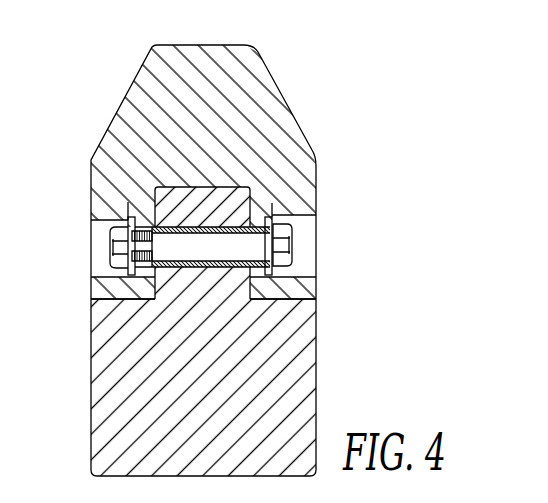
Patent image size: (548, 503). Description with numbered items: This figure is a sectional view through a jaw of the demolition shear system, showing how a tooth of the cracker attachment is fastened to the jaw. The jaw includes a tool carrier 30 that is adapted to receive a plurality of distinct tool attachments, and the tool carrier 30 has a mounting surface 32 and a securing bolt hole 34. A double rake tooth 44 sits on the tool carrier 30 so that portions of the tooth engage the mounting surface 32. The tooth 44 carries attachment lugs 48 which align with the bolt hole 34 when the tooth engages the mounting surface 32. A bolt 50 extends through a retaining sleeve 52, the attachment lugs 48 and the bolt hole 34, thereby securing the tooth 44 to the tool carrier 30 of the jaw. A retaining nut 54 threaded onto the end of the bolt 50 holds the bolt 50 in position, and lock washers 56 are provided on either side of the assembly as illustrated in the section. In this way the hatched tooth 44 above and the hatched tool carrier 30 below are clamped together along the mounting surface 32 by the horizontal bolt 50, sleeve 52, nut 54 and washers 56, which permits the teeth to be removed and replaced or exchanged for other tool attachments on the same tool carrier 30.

The tool carrier 30 is at (316, 363).
The mounting surface 32 is at (297, 304).
The securing bolt hole 34 is at (212, 268).
The double rake tooth 44 is at (268, 92).
The attachment lug 48 is at (92, 289).
The bolt 50 is at (295, 243).
The retaining sleeve 52 is at (183, 224).
The retaining nut 54 is at (108, 234).
The lock washer 56 is at (150, 197).